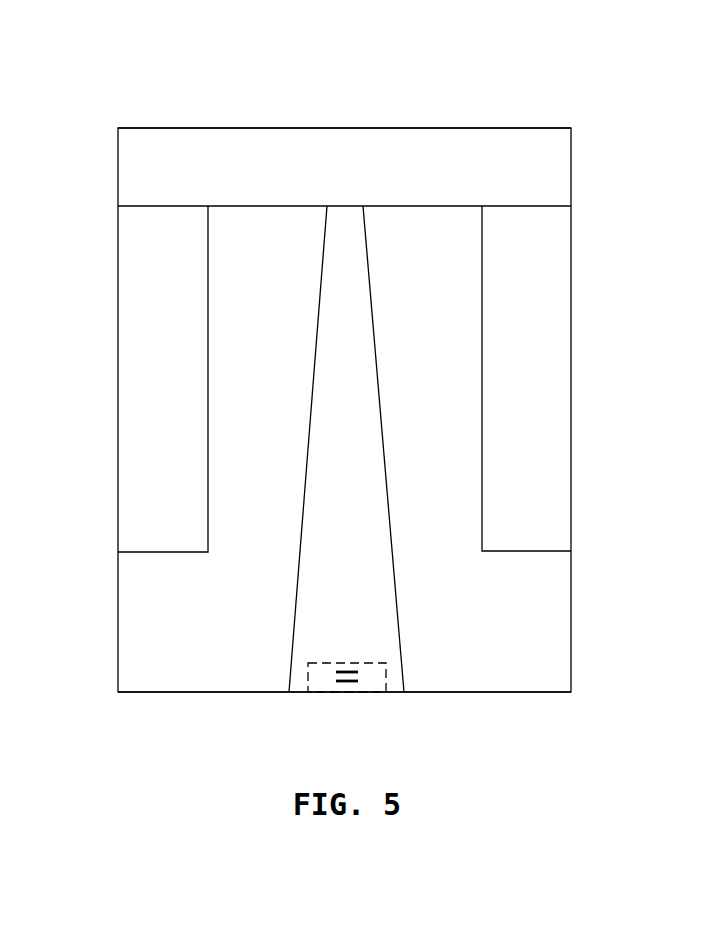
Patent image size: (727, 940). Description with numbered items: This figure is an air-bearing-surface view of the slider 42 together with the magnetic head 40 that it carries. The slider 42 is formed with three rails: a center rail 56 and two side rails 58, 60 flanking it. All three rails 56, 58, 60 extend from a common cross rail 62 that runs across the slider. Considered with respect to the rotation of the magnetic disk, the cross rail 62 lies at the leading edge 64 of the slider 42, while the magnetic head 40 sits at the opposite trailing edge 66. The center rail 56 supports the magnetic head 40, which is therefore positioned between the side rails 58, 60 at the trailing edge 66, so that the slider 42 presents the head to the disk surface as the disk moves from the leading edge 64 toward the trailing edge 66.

The magnetic head 40 is at (325, 690).
The slider 42 is at (118, 640).
The center rail 56 is at (330, 320).
The side rail 58 is at (135, 288).
The side rail 60 is at (553, 286).
The cross rail 62 is at (263, 140).
The leading edge 64 is at (446, 128).
The trailing edge 66 is at (471, 692).